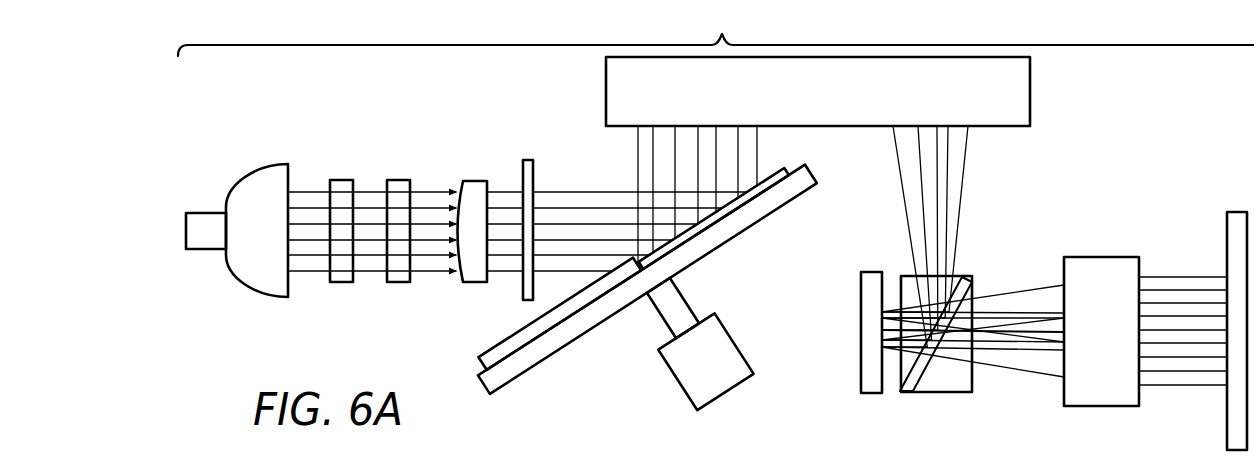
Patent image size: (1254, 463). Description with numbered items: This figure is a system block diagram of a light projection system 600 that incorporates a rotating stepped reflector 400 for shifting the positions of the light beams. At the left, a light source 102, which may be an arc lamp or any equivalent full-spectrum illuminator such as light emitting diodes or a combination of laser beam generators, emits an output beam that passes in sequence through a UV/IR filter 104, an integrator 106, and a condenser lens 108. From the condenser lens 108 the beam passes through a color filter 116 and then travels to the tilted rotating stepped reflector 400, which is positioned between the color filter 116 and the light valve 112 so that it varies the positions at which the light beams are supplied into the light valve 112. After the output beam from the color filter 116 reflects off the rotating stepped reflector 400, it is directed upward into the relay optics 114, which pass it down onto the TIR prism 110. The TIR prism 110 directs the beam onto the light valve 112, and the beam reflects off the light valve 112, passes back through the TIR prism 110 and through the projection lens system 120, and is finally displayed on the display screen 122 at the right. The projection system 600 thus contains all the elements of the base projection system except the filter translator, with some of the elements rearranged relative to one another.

The projection system 600 is at (716, 31).
The light source 102 is at (265, 172).
The UV/IR filter 104 is at (343, 180).
The integrator 106 is at (400, 180).
The condenser lens 108 is at (480, 180).
The color filter 116 is at (529, 160).
The relay optics 114 is at (606, 105).
The rotating stepped reflector 400 is at (743, 268).
The light valve 112 is at (861, 378).
The TIR prism 110 is at (940, 392).
The projection lens system 120 is at (1093, 257).
The display screen 122 is at (1240, 212).